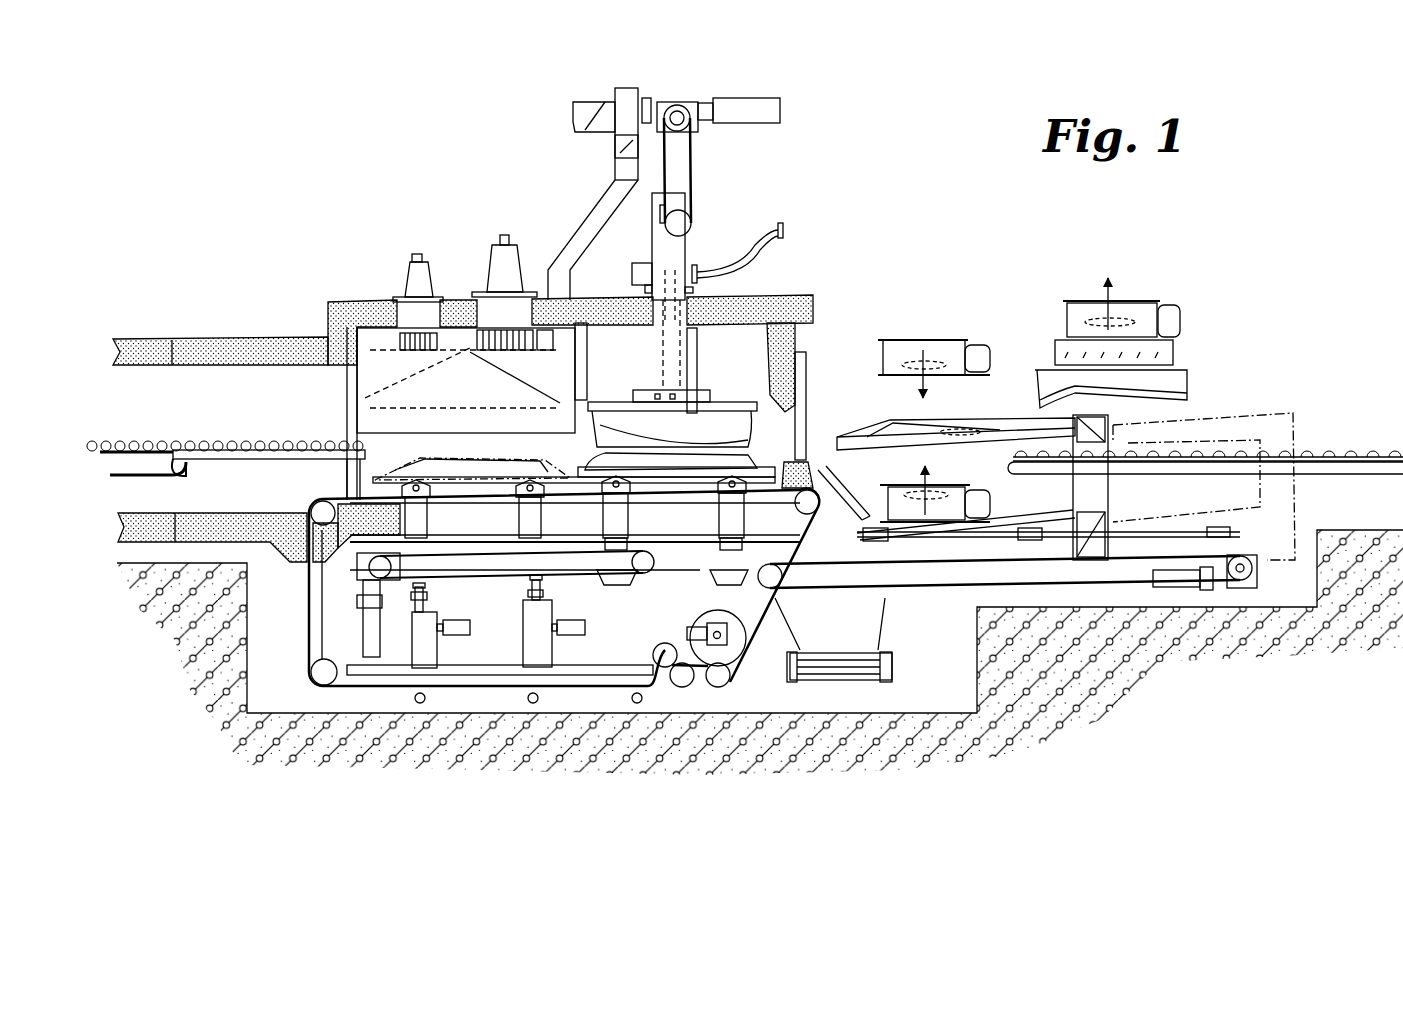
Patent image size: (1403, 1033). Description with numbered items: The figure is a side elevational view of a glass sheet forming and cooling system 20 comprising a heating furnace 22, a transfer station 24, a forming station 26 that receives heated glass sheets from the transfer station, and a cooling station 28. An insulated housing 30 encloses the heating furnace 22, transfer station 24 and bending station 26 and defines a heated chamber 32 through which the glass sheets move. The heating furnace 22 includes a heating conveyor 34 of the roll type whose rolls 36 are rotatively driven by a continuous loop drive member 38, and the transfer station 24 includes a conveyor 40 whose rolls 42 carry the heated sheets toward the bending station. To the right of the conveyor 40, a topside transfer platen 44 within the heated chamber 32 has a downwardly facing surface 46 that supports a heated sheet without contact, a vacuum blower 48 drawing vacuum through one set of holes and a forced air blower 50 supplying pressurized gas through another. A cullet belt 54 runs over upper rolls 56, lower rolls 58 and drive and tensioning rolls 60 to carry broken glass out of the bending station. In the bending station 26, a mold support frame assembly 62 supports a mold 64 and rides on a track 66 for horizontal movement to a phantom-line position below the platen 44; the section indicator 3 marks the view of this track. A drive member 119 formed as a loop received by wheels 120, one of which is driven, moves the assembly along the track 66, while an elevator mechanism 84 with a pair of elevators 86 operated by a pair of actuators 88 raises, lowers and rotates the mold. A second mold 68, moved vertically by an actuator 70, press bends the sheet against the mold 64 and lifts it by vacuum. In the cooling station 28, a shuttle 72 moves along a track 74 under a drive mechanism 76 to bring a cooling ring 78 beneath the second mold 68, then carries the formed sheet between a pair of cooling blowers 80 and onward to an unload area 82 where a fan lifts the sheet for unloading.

The glass sheet forming and cooling system 20 is at (840, 136).
The heating furnace 22 is at (140, 330).
The transfer station 24 is at (308, 318).
The forming station 26 is at (772, 280).
The cooling station 28 is at (985, 308).
The insulated housing 30 is at (336, 300).
The heated chamber 32 is at (172, 413).
The heating conveyor 34 is at (154, 440).
The rolls 36 is at (97, 445).
The continuous loop drive member 38 is at (127, 487).
The conveyor 40 is at (256, 440).
The rolls 42 is at (205, 443).
The topside transfer platen 44 is at (358, 425).
The downwardly facing surface 46 is at (412, 447).
The vacuum blower 48 is at (513, 316).
The forced air blower 50 is at (428, 316).
The cullet belt 54 is at (320, 488).
The upper rolls 56 is at (815, 500).
The lower rolls 58 is at (328, 683).
The drive and tensioning rolls 60 is at (735, 642).
The mold support frame assembly 62 is at (664, 580).
The mold 64 is at (660, 452).
The track 66 is at (697, 533).
The second mold 68 is at (724, 430).
The actuator 70 is at (708, 192).
The shuttle 72 is at (1110, 430).
The track 74 is at (1040, 543).
The drive mechanism 76 is at (1098, 560).
The cooling ring 78 is at (882, 432).
The cooling blowers 80 is at (945, 338).
The unload area 82 is at (1182, 330).
The elevator mechanism 84 is at (318, 657).
The elevators 86 is at (455, 643).
The actuators 88 is at (453, 624).
The drive member 119 is at (497, 625).
The wheels 120 is at (655, 563).
The section line for FIG. 3 is at (549, 447).